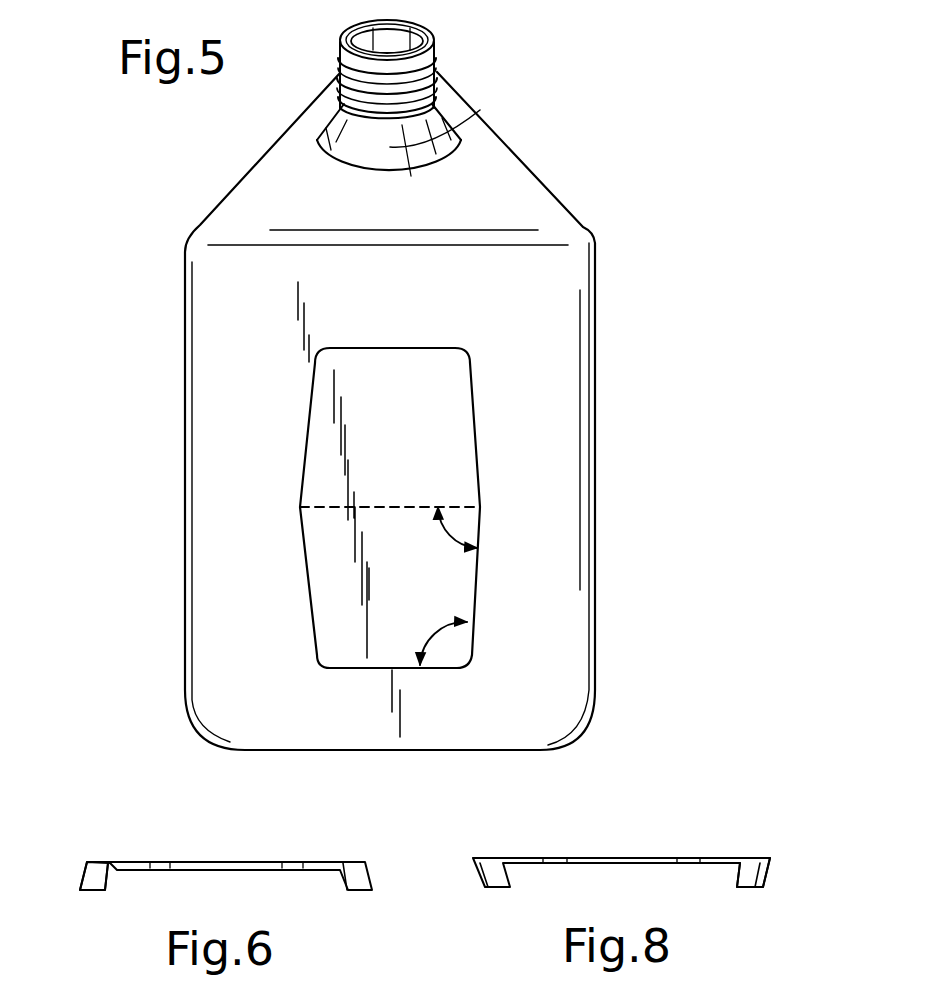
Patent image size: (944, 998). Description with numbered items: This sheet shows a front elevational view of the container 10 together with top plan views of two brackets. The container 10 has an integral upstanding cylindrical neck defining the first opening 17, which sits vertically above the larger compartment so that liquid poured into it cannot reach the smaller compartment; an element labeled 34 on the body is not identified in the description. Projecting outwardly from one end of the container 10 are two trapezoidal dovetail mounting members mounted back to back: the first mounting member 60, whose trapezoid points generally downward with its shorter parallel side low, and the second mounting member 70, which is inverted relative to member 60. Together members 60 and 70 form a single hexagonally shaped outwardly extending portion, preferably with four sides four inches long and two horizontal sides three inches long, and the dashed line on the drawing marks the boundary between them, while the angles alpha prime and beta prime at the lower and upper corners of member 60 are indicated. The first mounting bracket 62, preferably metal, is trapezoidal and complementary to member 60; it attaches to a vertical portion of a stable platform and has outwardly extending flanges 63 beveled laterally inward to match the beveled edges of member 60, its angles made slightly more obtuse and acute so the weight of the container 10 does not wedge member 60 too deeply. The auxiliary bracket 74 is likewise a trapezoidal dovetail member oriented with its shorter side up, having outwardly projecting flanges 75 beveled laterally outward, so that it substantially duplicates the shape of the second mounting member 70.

In FIG. 5, the container 10 is at (618, 214).
In FIG. 5, the first opening 17 is at (395, 150).
In FIG. 5, the side wall 34 is at (405, 283).
In FIG. 5, the second mounting member 70 is at (418, 438).
In FIG. 5, the first mounting member 60 is at (430, 585).
In FIG. 6, the auxiliary bracket 74 is at (153, 868).
In FIG. 6, the flanges 75 is at (88, 880).
In FIG. 8, the first mounting bracket 62 is at (668, 862).
In FIG. 8, the flanges 63 is at (767, 873).